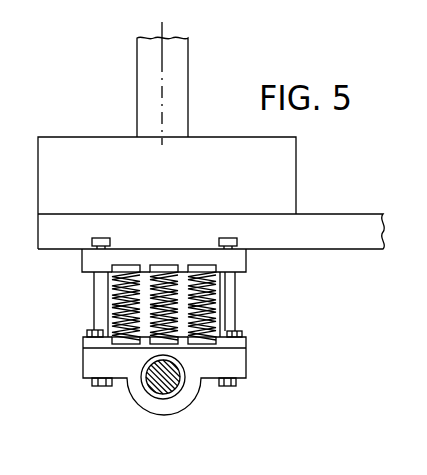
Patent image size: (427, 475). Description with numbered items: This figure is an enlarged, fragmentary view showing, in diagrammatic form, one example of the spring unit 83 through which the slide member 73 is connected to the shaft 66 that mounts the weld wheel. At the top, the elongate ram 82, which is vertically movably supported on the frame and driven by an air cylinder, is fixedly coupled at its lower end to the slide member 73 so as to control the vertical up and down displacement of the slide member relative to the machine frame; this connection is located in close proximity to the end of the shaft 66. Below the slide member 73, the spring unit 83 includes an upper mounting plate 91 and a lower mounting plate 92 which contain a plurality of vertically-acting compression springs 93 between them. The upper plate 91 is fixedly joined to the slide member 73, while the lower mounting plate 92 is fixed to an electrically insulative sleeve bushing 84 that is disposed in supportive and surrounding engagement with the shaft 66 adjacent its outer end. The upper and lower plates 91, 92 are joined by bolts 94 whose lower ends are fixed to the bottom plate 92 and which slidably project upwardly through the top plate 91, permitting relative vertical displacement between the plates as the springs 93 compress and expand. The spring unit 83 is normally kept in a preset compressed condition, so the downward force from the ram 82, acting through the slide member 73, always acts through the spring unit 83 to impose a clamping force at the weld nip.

The shaft 66 is at (160, 382).
The slide member 73 is at (352, 225).
The ram 82 is at (183, 66).
The spring unit 83 is at (179, 298).
The sleeve bushing 84 is at (234, 365).
The upper mounting plate 91 is at (239, 263).
The lower mounting plate 92 is at (236, 342).
The compression springs 93 is at (212, 290).
The bolts 94 is at (107, 292).